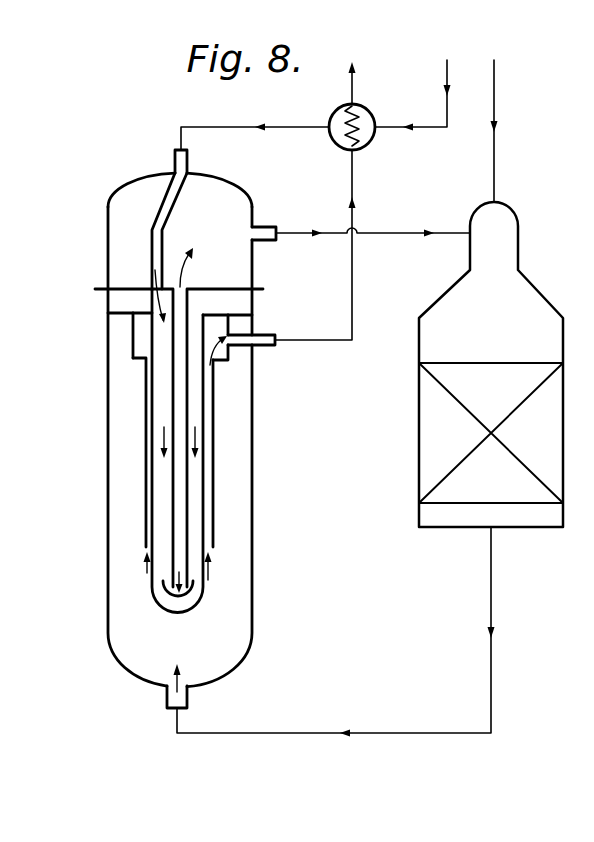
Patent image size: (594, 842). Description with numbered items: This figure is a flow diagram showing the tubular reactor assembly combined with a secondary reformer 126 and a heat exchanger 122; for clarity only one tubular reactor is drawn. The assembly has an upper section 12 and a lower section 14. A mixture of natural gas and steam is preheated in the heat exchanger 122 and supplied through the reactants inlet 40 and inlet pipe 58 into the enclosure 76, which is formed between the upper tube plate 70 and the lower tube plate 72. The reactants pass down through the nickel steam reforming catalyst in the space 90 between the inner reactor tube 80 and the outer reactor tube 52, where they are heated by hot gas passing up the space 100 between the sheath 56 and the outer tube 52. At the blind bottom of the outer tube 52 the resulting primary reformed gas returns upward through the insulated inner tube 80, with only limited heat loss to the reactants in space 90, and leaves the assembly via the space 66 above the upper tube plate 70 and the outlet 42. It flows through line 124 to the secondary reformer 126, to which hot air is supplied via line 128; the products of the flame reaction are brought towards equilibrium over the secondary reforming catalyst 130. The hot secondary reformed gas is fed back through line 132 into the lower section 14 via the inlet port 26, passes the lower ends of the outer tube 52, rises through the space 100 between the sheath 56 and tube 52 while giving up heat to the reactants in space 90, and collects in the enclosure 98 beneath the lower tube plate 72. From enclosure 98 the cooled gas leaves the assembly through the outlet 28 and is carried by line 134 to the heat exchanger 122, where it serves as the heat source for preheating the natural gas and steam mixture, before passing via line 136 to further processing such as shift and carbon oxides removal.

The upper section 12 is at (100, 222).
The lower section 14 is at (90, 432).
The secondary reformer gas inlet 26 is at (189, 700).
The secondary reformer gas outlet 28 is at (270, 333).
The reactants inlet 40 is at (188, 163).
The primary reformed gas outlet 42 is at (272, 226).
The outer reactor tube 52 is at (193, 585).
The sheath 56 is at (215, 513).
The reactants inlet pipe 58 is at (160, 207).
The space 66 is at (200, 255).
The upper tube plate 70 is at (115, 287).
The lower tube plate 72 is at (117, 323).
The enclosure 76 is at (117, 302).
The inner reactor tube 80 is at (172, 568).
The space 90 is at (160, 397).
The enclosure 98 is at (140, 334).
The space 100 is at (210, 425).
The heat exchanger 122 is at (369, 144).
The line 124 is at (403, 231).
The secondary reformer 126 is at (552, 303).
The line 128 is at (466, 131).
The secondary reforming catalyst 130 is at (418, 445).
The line 132 is at (303, 730).
The line 134 is at (354, 292).
The line 136 is at (356, 83).